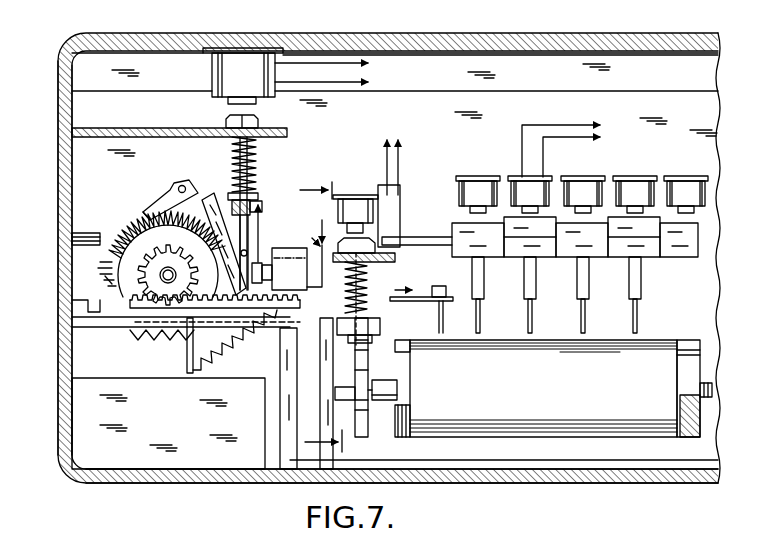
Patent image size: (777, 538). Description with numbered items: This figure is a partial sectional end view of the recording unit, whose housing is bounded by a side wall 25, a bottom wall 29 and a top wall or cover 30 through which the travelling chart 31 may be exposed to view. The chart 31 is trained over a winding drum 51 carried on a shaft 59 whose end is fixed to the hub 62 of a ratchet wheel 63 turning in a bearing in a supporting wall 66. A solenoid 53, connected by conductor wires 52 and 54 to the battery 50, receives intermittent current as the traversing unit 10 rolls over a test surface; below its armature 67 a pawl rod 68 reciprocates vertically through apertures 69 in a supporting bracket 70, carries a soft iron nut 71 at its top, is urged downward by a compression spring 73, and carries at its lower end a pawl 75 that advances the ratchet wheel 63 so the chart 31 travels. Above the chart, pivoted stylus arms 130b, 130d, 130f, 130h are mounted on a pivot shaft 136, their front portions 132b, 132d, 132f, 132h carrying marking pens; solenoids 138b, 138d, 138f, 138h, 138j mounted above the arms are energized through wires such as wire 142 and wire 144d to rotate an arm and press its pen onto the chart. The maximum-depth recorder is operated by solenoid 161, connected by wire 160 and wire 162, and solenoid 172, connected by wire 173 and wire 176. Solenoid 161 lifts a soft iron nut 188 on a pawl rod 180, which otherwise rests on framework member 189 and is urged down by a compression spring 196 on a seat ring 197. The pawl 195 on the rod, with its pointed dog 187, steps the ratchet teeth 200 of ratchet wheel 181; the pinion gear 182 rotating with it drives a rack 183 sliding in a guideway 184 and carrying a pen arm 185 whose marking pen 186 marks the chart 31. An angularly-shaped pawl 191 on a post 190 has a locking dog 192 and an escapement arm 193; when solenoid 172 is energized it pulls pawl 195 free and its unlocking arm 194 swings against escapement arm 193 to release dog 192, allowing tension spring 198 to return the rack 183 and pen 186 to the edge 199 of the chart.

The top wall or cover 30 is at (373, 33).
The side wall 25 is at (58, 215).
The bottom wall 29 is at (560, 477).
The solenoid 161 is at (222, 73).
The wire 160 is at (339, 65).
The wire 162 is at (332, 84).
The framework member 189 is at (128, 128).
The soft iron nut 188 is at (226, 121).
The pawl rod 180 is at (233, 157).
The compression spring 196 is at (257, 155).
The seat ring 197 is at (250, 196).
The unlocking arm 194 is at (262, 208).
The escapement arm 193 is at (204, 195).
The post 190 is at (181, 183).
The angularly-shaped pawl 191 is at (157, 193).
The locking dog 192 is at (141, 208).
The pointed dog 187 is at (216, 276).
The ratchet wheel 181 is at (128, 236).
The pinion gear 182 is at (110, 278).
The ratchet teeth 200 is at (108, 281).
The pawl 195 is at (248, 253).
The guideway 184 is at (75, 320).
The rack 183 is at (165, 305).
The tension spring 198 is at (263, 338).
The battery 50 is at (157, 428).
The solenoid 172 is at (279, 283).
The wire 176 is at (321, 244).
The wire 173 is at (305, 234).
The traversing unit 10 is at (321, 314).
The conductor wire 52 is at (385, 152).
The conductor wire 54 is at (400, 156).
The solenoid 53 is at (356, 195).
The armature 67 is at (360, 222).
The nut 71 is at (358, 247).
The pivot shaft 136 is at (455, 224).
The supporting bracket 70 is at (396, 259).
The apertures 69 is at (368, 282).
The pawl rod 68 is at (384, 299).
The compression spring 73 is at (347, 284).
The pawl 75 is at (372, 339).
The pen arm 185 is at (418, 301).
The marking pen 186 is at (443, 325).
The supporting wall 66 is at (326, 372).
The ratchet wheel 63 is at (362, 437).
The hub 62 is at (376, 380).
The edge of chart 199 is at (398, 410).
The chart 31 is at (536, 386).
The chart winding drum 51 is at (690, 361).
The shaft 59 is at (712, 390).
The solenoid 138b is at (478, 185).
The solenoid 138d is at (540, 186).
The solenoid 138f is at (591, 190).
The solenoid 138h is at (641, 190).
The solenoid 138j is at (686, 190).
The recorder arm 130b is at (492, 247).
The recorder arm 130d is at (546, 245).
The recorder arm 130f is at (598, 248).
The recorder arm 130h is at (653, 248).
The front portion 132b is at (480, 318).
The front portion 132d is at (532, 318).
The front portion 132f is at (585, 318).
The front portion 132h is at (637, 318).
The wire 144d is at (570, 125).
The wire 142 is at (576, 137).